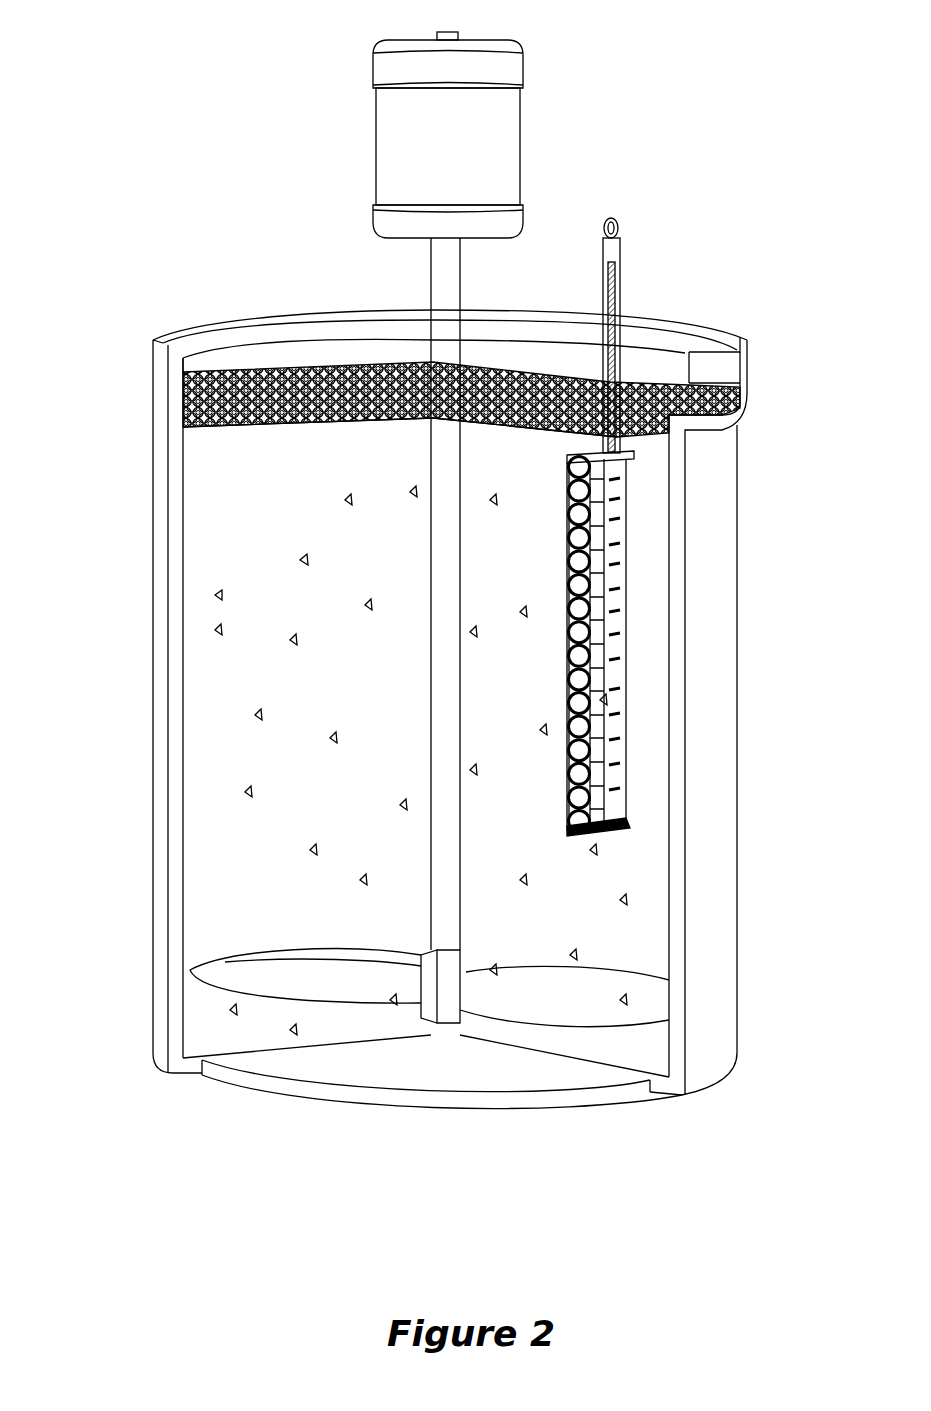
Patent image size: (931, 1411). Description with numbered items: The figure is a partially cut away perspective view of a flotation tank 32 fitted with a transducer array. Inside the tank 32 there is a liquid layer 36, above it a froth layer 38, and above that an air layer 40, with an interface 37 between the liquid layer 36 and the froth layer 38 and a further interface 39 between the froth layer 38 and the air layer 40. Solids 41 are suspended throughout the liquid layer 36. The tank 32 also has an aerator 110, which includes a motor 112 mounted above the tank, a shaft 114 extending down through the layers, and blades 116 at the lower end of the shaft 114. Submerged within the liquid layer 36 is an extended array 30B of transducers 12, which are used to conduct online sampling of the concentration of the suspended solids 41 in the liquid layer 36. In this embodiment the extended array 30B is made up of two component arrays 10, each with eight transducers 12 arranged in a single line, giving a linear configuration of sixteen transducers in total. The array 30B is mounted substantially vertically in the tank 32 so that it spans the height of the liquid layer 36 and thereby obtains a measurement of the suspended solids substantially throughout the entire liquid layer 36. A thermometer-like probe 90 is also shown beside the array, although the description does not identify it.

The component array 10 is at (546, 705).
The transducer 12 is at (577, 654).
The extended array 30B is at (616, 624).
The flotation tank 32 is at (723, 680).
The liquid layer 36 is at (225, 541).
The interface 37 is at (243, 427).
The froth layer 38 is at (183, 393).
The interface 39 is at (234, 366).
The air layer 40 is at (293, 352).
The solids 41 is at (238, 598).
The thermometer 90 is at (615, 265).
The aerator 110 is at (415, 271).
The motor 112 is at (462, 155).
The shaft 114 is at (440, 685).
The blades 116 is at (250, 966).